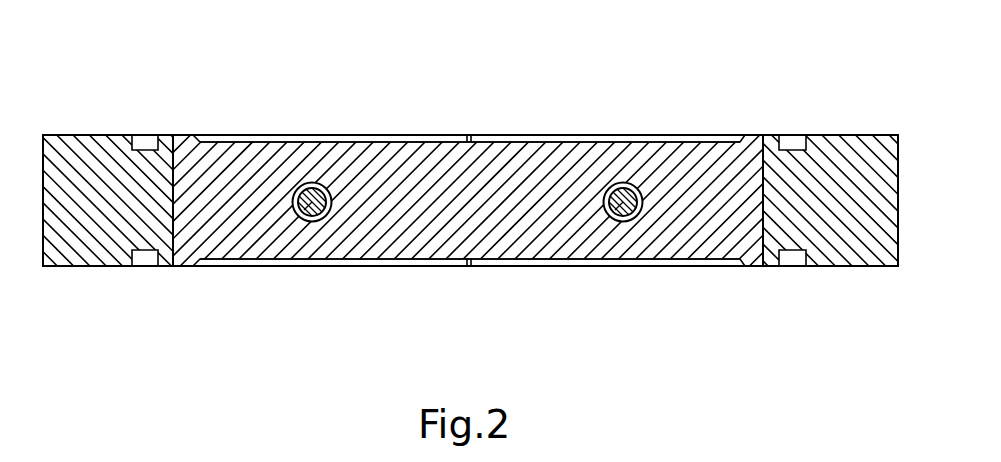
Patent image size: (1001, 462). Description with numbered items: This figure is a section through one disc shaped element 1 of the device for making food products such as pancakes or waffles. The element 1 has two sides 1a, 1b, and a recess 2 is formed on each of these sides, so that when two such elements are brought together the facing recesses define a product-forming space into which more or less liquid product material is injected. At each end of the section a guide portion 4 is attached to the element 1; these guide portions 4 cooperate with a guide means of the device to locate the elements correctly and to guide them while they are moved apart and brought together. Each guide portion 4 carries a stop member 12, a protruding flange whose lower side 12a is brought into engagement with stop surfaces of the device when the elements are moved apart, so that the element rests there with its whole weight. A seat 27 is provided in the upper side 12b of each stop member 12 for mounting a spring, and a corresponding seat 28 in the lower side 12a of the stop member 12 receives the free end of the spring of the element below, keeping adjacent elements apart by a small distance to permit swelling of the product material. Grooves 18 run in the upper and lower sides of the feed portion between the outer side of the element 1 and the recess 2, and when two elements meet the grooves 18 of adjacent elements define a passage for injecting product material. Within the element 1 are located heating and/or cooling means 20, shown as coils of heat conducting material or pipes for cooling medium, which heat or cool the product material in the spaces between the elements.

The element 1 is at (247, 101).
The side of the element 1a is at (181, 136).
The side of the element 1b is at (755, 266).
The recess 2 is at (328, 137).
The guide portion 4 is at (831, 111).
The stop member 12 is at (85, 228).
The lower side of the stop member 12a is at (50, 267).
The upper side of the stop member 12b is at (48, 136).
The groove 18 is at (467, 138).
The heating and/or cooling means 20 is at (312, 212).
The seat 27 is at (140, 136).
The seat 28 is at (150, 252).